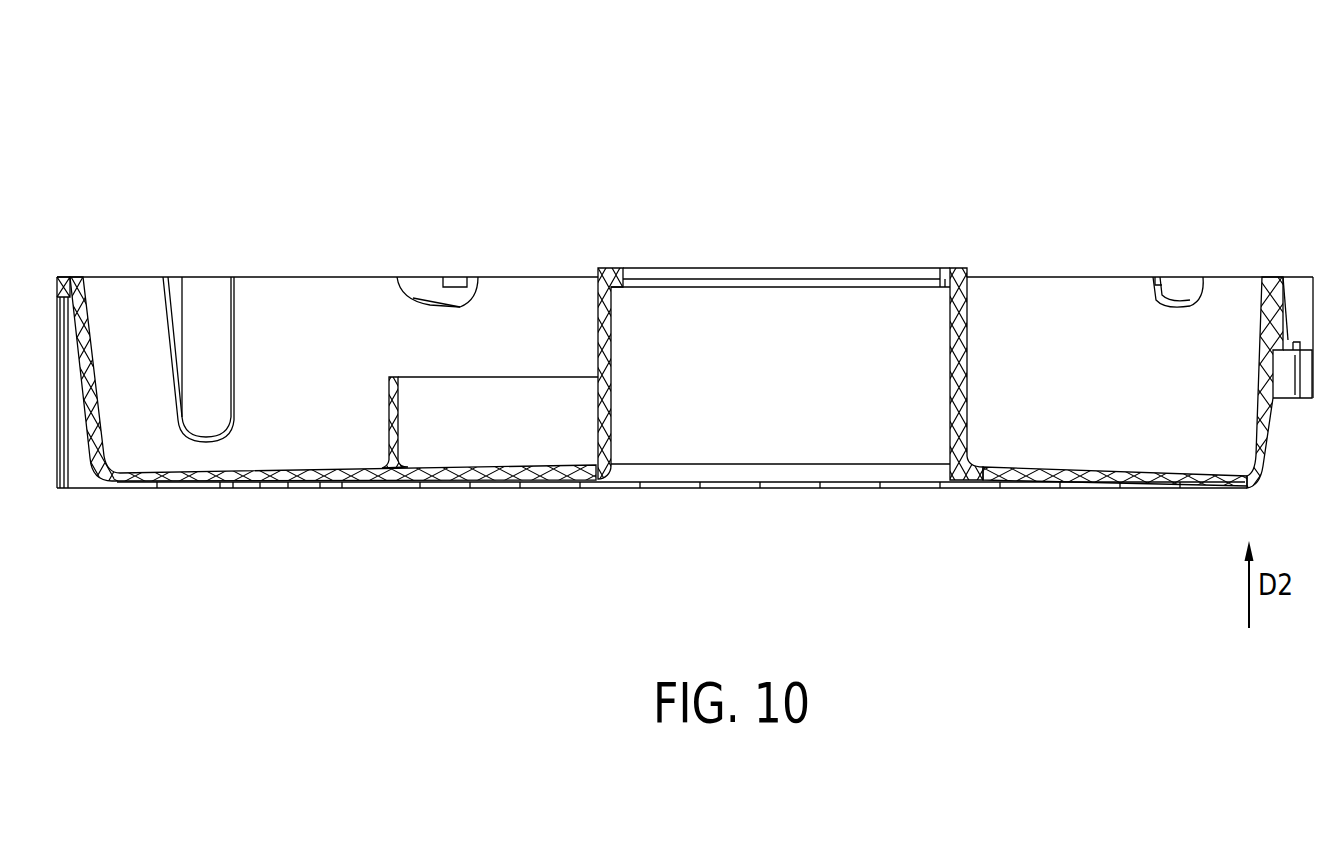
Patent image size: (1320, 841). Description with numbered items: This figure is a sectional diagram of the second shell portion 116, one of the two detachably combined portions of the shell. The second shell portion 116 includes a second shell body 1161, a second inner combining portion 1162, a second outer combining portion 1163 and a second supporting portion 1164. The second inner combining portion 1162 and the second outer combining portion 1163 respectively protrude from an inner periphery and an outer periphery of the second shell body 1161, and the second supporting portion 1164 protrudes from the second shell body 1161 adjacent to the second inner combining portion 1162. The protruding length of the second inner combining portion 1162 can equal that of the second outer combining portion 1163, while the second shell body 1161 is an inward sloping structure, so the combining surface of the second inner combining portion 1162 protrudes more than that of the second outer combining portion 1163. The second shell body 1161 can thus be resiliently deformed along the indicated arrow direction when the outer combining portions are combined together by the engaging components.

The second shell portion 116 is at (685, 338).
The second shell body 1161 is at (210, 482).
The second inner combining portion 1162 is at (950, 278).
The second outer combining portion 1163 is at (1250, 278).
The second supporting portion 1164 is at (392, 480).